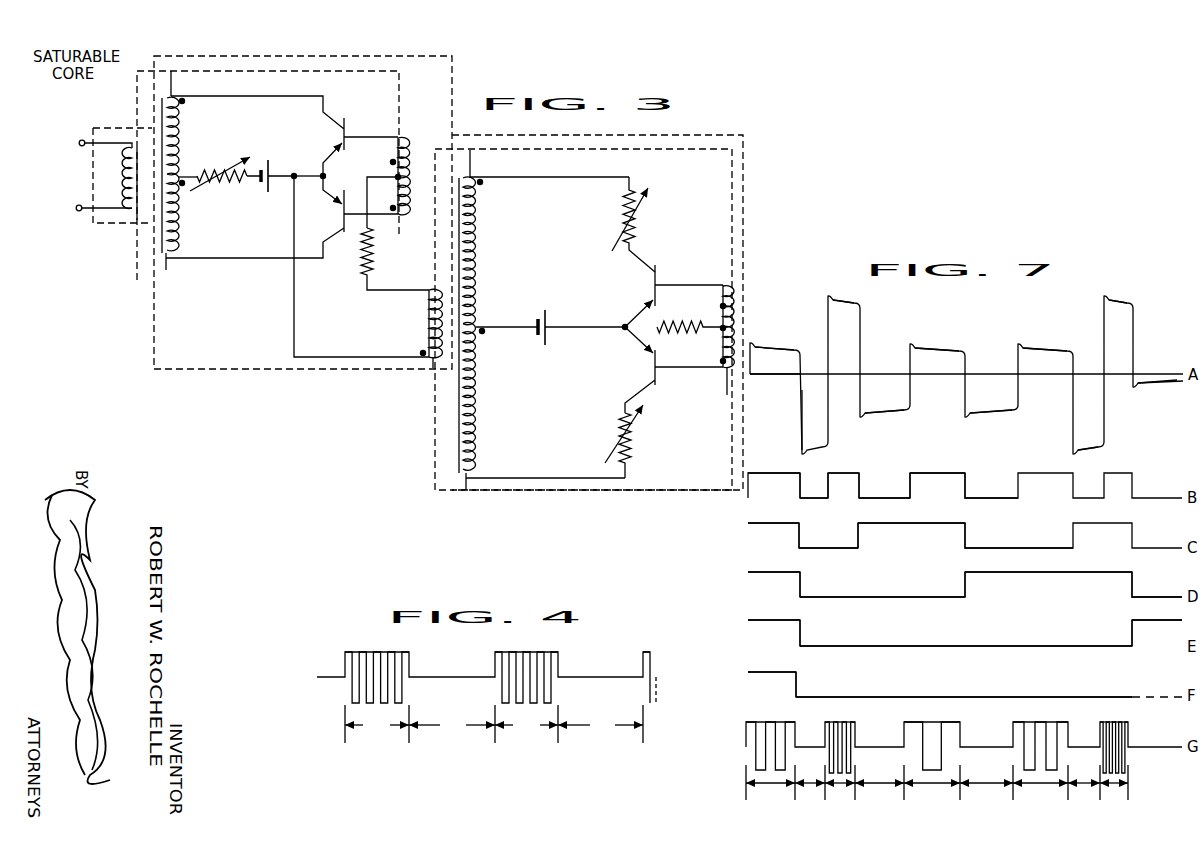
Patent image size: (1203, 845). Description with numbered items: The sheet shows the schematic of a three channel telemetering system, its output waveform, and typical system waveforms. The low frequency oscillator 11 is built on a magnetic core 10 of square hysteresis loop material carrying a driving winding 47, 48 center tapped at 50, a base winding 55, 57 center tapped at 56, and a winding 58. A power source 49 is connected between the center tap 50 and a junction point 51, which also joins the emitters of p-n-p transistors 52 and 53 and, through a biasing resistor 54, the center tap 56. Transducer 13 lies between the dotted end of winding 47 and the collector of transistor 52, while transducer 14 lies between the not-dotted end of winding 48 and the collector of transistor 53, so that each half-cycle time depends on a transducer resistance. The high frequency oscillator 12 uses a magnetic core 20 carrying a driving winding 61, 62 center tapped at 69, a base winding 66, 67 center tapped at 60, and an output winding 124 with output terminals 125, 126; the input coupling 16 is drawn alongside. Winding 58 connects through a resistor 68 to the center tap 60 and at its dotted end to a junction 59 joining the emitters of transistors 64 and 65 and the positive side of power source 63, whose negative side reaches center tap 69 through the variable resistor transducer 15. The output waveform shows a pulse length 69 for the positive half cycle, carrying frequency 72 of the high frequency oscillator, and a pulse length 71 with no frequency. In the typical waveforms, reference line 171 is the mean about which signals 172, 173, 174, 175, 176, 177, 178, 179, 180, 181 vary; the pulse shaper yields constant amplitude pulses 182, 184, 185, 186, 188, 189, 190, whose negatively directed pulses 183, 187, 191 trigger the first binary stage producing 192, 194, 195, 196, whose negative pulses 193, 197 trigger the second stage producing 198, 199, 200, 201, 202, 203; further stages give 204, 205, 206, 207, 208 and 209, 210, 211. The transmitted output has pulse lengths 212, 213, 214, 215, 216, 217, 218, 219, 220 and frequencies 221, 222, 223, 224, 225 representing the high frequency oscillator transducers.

In FIG. 3, the magnetic core 10 is at (697, 148).
In FIG. 3, the low frequency oscillator 11 is at (746, 168).
In FIG. 3, the high frequency oscillator 12 is at (452, 80).
In FIG. 3, the transducer 13 is at (623, 213).
In FIG. 3, the transducer 14 is at (620, 437).
In FIG. 3, the transducer 15 is at (226, 178).
In FIG. 3, the input transformer 16 is at (113, 128).
In FIG. 3, the magnetic core 20 is at (137, 94).
In FIG. 3, the driving winding half 47 is at (477, 228).
In FIG. 3, the driving winding half 48 is at (476, 418).
In FIG. 3, the power source 49 is at (547, 312).
In FIG. 3, the center tap 50 is at (484, 327).
In FIG. 3, the junction point 51 is at (621, 324).
In FIG. 3, the p-n-p transistor 52 is at (658, 276).
In FIG. 3, the p-n-p transistor 53 is at (658, 384).
In FIG. 3, the biasing resistor 54 is at (684, 318).
In FIG. 3, the base winding half 55 is at (720, 306).
In FIG. 3, the center tap 56 is at (722, 328).
In FIG. 3, the base winding half 57 is at (722, 358).
In FIG. 3, the winding 58 is at (420, 328).
In FIG. 3, the junction 59 is at (308, 166).
In FIG. 3, the center tap 60 is at (402, 178).
In FIG. 3, the driving winding half 61 is at (178, 135).
In FIG. 3, the driving winding half 62 is at (176, 226).
In FIG. 3, the power source 63 is at (268, 160).
In FIG. 3, the p-n-p transistor 64 is at (346, 126).
In FIG. 3, the p-n-p transistor 65 is at (346, 205).
In FIG. 3, the base winding half 66 is at (410, 152).
In FIG. 3, the base winding half 67 is at (400, 210).
In FIG. 3, the resistor 68 is at (372, 256).
In FIG. 3, the center tap / pulse length 69 is at (182, 180).
In FIG. 4, the center tap / pulse length 69 is at (451, 726).
In FIG. 4, the pulse length 71 is at (526, 726).
In FIG. 4, the frequency 72 is at (358, 648).
In FIG. 3, the output winding 124 is at (126, 176).
In FIG. 3, the output terminal 125 is at (80, 140).
In FIG. 3, the output terminal 126 is at (77, 206).
In FIG. 7, the reference line 171 is at (772, 376).
In FIG. 7, the signal 172 is at (786, 351).
In FIG. 7, the signal 173 is at (801, 416).
In FIG. 7, the signal 174 is at (843, 303).
In FIG. 7, the signal 175 is at (886, 411).
In FIG. 7, the signal 176 is at (940, 344).
In FIG. 7, the signal 177 is at (993, 411).
In FIG. 7, the signal 178 is at (1050, 344).
In FIG. 7, the signal 179 is at (1090, 448).
In FIG. 7, the signal 180 is at (1120, 303).
In FIG. 7, the signal 181 is at (1160, 382).
In FIG. 7, the pulse shaper output pulse 182 is at (785, 471).
In FIG. 7, the negatively directed output pulse 183 is at (798, 486).
In FIG. 7, the pulse shaper output pulse 184 is at (815, 497).
In FIG. 7, the pulse shaper output pulse 185 is at (814, 475).
In FIG. 7, the pulse shaper output pulse 186 is at (857, 463).
In FIG. 7, the negatively directed output pulse 187 is at (857, 486).
In FIG. 7, the pulse shaper output pulse 188 is at (887, 497).
In FIG. 7, the pulse shaper output pulse 189 is at (906, 470).
In FIG. 7, the pulse shaper output pulse 190 is at (951, 463).
In FIG. 7, the negatively directed output pulse 191 is at (967, 486).
In FIG. 7, the first binary stage output 192 is at (785, 521).
In FIG. 7, the negatively directed output pulse 193 is at (800, 527).
In FIG. 7, the first binary stage cycle portion 194 is at (829, 547).
In FIG. 7, the first binary stage output 195 is at (856, 528).
In FIG. 7, the first binary stage cycle portion 196 is at (909, 523).
In FIG. 7, the negatively directed output pulse 197 is at (967, 540).
In FIG. 7, the second binary stage output 198 is at (786, 571).
In FIG. 7, the second binary stage output 199 is at (800, 586).
In FIG. 7, the second binary stage cycle portion 200 is at (882, 596).
In FIG. 7, the second binary stage output 201 is at (960, 583).
In FIG. 7, the second binary stage cycle portion 202 is at (1056, 571).
In FIG. 7, the second binary stage output 203 is at (1128, 592).
In FIG. 7, the waveform E high level 204 is at (786, 620).
In FIG. 7, the waveform E transition 205 is at (801, 636).
In FIG. 7, the waveform E low level 206 is at (986, 646).
In FIG. 7, the waveform E transition 207 is at (1128, 638).
In FIG. 7, the waveform E high level 208 is at (1172, 620).
In FIG. 7, the waveform F high level 209 is at (786, 672).
In FIG. 7, the waveform F transition 210 is at (798, 687).
In FIG. 7, the waveform F low level 211 is at (962, 692).
In FIG. 7, the pulse length 212 is at (770, 795).
In FIG. 7, the pulse length 213 is at (810, 795).
In FIG. 7, the pulse length 214 is at (840, 795).
In FIG. 7, the pulse length 215 is at (879, 795).
In FIG. 7, the pulse length 216 is at (932, 795).
In FIG. 7, the pulse length 217 is at (986, 795).
In FIG. 7, the pulse length 218 is at (1040, 795).
In FIG. 7, the pulse length 219 is at (1084, 795).
In FIG. 7, the pulse length 220 is at (1115, 795).
In FIG. 7, the frequency 221 is at (750, 722).
In FIG. 7, the frequency 222 is at (822, 722).
In FIG. 7, the frequency 223 is at (910, 722).
In FIG. 7, the frequency 224 is at (1019, 722).
In FIG. 7, the frequency 225 is at (1096, 722).